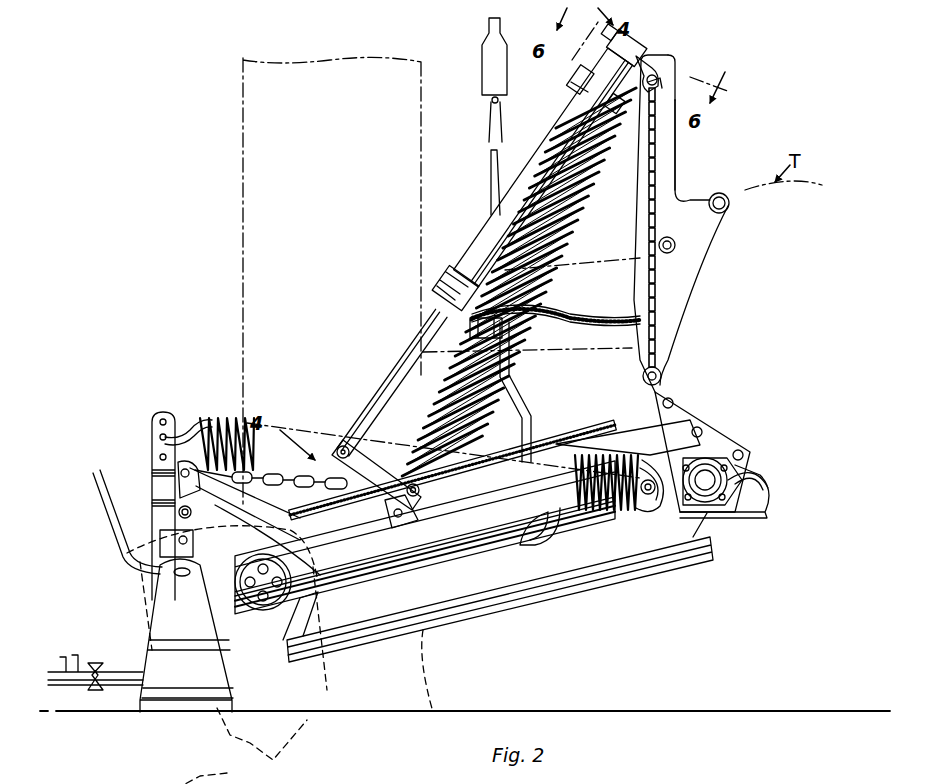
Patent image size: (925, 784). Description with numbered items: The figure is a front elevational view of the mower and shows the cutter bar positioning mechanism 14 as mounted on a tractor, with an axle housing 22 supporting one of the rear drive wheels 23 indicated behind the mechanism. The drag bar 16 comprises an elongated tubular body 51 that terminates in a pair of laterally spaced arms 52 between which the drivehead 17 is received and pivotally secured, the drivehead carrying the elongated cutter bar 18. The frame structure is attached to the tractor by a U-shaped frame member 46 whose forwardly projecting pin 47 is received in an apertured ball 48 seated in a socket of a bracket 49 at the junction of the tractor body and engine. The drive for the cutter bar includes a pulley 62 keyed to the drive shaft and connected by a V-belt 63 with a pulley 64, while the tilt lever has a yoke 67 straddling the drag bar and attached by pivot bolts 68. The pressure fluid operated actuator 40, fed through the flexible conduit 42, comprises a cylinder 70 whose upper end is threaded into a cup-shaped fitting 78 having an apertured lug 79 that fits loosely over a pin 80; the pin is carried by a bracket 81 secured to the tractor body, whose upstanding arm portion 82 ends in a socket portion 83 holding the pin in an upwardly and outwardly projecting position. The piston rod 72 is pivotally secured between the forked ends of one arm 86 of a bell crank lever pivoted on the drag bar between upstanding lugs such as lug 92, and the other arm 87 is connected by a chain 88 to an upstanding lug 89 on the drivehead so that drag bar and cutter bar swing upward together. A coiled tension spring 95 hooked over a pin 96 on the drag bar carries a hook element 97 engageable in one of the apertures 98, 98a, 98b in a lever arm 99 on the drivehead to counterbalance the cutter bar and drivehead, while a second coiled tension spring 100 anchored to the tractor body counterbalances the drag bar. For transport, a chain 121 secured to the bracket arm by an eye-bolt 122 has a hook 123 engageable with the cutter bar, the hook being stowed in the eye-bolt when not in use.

The cutter bar positioning mechanism 14 is at (455, 262).
The drag bar 16 is at (364, 590).
The drivehead 17 is at (243, 660).
The cutter bar 18 is at (80, 665).
The axle housings 22 is at (585, 353).
The rear drive wheels 23 is at (243, 217).
The pressure fluid operated actuator 40 is at (479, 232).
The flexible conduit 42 is at (574, 318).
The U-shaped frame member 46 is at (765, 503).
The forwardly projecting pin 47 is at (714, 475).
The ball 48 is at (745, 476).
The bracket 49 is at (690, 425).
The tubular body 51 is at (498, 540).
The laterally spaced arms 52 is at (290, 610).
The pulley 62 is at (700, 530).
The V-belt 63 is at (608, 440).
The pulley 64 is at (320, 532).
The yoke 67 is at (548, 568).
The pivot bolts 68 is at (575, 440).
The cylinder 70 is at (566, 130).
The piston rod 72 is at (388, 388).
The cup-shaped fitting 78 is at (620, 110).
The lug 79 is at (641, 45).
The pin 80 is at (578, 78).
The bracket 81 is at (690, 272).
The upstanding arm portion 82 is at (676, 163).
The socket portion 83 is at (652, 62).
The bell crank arm 86 is at (378, 458).
The bell crank arm 87 is at (424, 500).
The chain 88 is at (296, 472).
The upstanding lug 89 is at (193, 490).
The upstanding lug 92 is at (388, 522).
The coiled tension spring 95 is at (210, 418).
The pin 96 is at (650, 480).
The hook element 97 is at (163, 437).
The aperture 98 is at (163, 414).
The aperture 98a is at (158, 457).
The aperture 98b is at (152, 478).
The lever arm 99 is at (163, 515).
The coiled tension spring 100 is at (553, 256).
The chain 121 is at (647, 196).
The eye-bolt 122 is at (678, 68).
The hook 123 is at (662, 112).